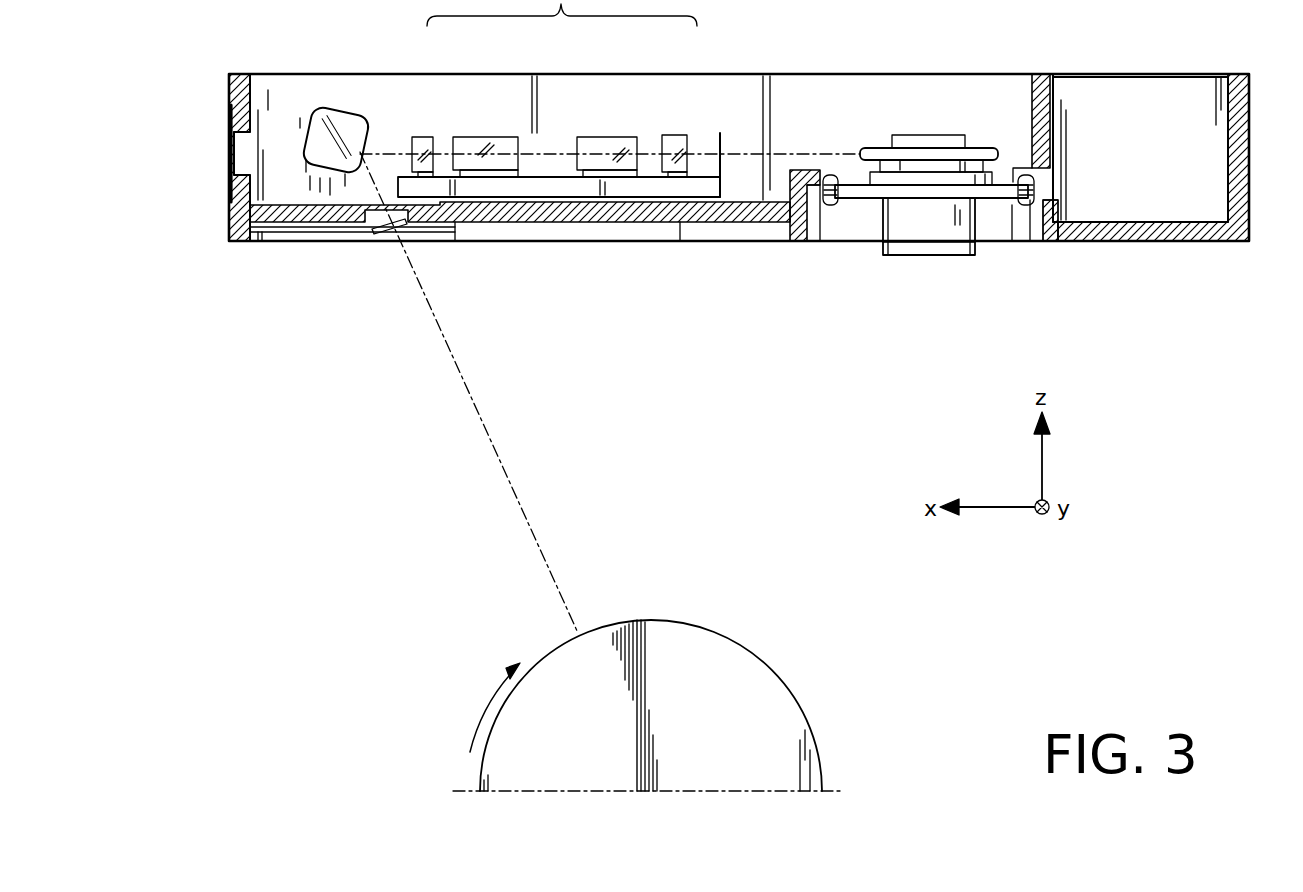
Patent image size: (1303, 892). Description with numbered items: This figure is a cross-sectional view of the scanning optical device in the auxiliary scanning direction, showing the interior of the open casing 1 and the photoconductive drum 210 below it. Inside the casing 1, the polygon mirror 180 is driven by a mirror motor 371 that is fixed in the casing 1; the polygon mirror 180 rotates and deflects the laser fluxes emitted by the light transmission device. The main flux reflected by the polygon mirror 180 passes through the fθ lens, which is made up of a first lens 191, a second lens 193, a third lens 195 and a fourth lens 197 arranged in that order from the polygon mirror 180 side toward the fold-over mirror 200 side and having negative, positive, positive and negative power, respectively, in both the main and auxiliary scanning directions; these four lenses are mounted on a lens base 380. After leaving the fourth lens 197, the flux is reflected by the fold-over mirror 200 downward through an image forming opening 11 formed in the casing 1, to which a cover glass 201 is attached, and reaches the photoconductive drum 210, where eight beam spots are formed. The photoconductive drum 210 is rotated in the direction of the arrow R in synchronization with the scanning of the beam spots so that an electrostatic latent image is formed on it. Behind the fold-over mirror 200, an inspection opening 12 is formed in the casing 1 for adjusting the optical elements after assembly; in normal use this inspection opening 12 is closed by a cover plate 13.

The casing 1 is at (1245, 164).
The image forming opening 11 is at (367, 225).
The inspection opening 12 is at (232, 140).
The cover plate 13 is at (225, 176).
The polygon mirror 180 is at (947, 140).
The first lens 191 is at (678, 137).
The second lens 193 is at (603, 140).
The third lens 195 is at (487, 137).
The fourth lens 197 is at (422, 137).
The fold-over mirror 200 is at (350, 110).
The cover glass 201 is at (390, 234).
The photoconductive drum 210 is at (797, 650).
The mirror motor 371 is at (932, 230).
The lens base 380 is at (593, 188).